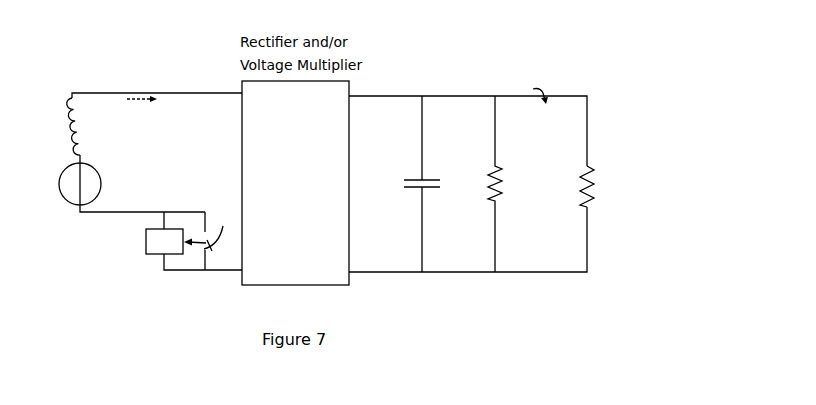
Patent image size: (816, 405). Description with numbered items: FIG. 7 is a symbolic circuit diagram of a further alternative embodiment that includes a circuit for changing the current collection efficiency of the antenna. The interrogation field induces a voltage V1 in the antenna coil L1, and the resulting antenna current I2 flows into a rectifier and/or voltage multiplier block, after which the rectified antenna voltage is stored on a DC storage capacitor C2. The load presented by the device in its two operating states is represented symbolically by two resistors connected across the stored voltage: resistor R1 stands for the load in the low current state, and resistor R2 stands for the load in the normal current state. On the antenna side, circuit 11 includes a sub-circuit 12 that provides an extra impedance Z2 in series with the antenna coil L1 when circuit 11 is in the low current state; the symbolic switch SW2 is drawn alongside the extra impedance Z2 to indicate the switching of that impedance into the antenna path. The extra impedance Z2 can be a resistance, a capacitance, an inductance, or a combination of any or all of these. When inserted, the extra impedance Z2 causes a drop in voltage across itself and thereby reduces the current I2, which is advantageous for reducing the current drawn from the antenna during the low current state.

The circuit 11 is at (529, 148).
The sub-circuit 12 is at (152, 244).
The antenna coil L1 is at (94, 126).
The voltage V1 is at (90, 184).
The current I2 is at (142, 110).
The extra impedance Z2 is at (148, 241).
The switch SW2 is at (201, 228).
The DC storage capacitor C2 is at (439, 184).
The resistor R2 is at (509, 184).
The resistor R1 is at (603, 186).